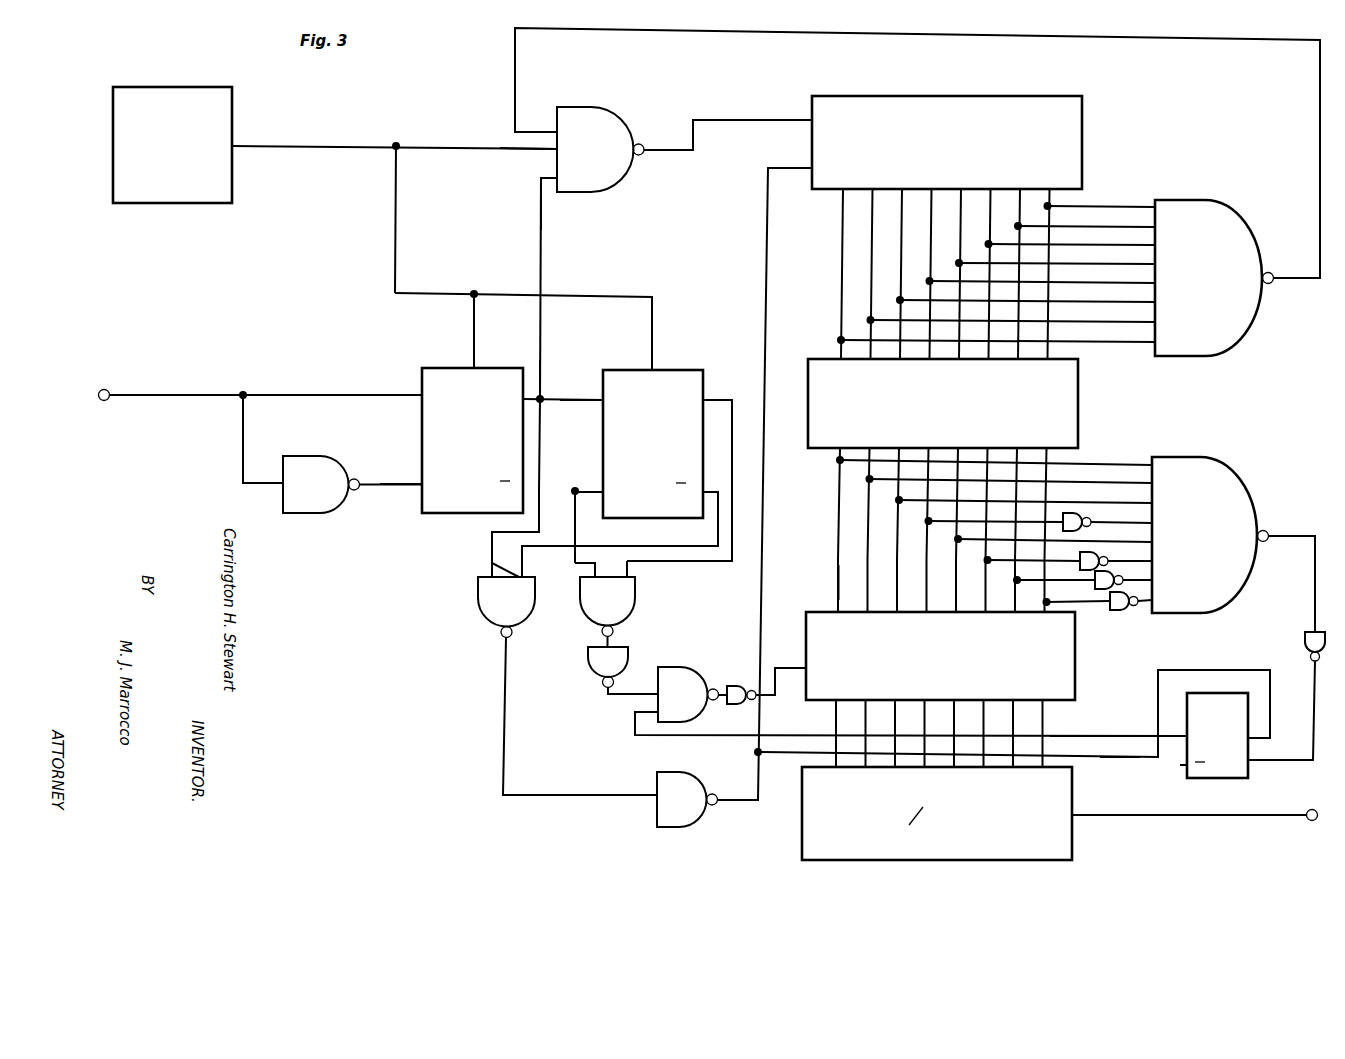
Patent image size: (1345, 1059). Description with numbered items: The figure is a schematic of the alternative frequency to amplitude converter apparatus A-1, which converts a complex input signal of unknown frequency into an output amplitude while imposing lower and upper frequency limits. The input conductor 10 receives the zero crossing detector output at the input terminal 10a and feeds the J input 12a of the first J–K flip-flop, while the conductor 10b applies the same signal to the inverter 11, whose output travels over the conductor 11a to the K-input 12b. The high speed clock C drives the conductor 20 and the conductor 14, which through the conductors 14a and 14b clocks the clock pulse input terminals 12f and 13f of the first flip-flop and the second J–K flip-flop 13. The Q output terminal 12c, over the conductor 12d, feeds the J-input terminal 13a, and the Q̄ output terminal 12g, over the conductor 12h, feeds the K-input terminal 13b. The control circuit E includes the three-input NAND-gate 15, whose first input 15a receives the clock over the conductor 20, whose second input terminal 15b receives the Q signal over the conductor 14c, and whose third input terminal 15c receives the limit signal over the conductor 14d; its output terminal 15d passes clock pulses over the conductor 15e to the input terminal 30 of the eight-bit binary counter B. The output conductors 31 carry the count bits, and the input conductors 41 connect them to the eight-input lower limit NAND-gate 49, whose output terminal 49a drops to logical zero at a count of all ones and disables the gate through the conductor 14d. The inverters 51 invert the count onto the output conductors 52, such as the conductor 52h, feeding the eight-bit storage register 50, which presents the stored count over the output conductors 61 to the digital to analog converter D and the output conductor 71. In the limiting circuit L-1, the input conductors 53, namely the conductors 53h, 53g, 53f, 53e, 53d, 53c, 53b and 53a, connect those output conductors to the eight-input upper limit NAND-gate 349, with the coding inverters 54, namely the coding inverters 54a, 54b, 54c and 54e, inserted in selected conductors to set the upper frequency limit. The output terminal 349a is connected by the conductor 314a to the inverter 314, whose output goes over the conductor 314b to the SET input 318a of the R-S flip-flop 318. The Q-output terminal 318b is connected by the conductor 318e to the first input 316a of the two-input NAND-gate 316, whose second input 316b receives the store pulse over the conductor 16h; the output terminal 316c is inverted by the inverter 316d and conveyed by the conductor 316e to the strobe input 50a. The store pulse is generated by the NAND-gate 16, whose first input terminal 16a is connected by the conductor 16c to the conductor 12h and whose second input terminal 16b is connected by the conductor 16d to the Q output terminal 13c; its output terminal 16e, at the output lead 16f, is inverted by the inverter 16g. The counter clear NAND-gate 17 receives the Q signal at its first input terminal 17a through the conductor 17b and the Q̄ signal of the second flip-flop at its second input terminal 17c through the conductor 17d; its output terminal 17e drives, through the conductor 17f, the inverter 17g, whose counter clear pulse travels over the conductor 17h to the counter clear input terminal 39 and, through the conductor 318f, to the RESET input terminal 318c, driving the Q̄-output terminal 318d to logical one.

The high speed clock C is at (233, 100).
The electrical conductor 20 is at (340, 141).
The electrical conductor 14 is at (395, 214).
The conductor 14a is at (474, 316).
The conductor 14b is at (571, 296).
The conductor 14c is at (541, 250).
The electrical conductor 14d is at (708, 30).
The three-input NAND-gate 15 is at (609, 108).
The first input of NAND-gate 15 15a is at (554, 152).
The second input terminal of NAND-gate 15 15b is at (557, 182).
The third input terminal of NAND-gate 15 15c is at (557, 133).
The output terminal of NAND-gate 15 15d is at (645, 156).
The electrical conductor 15e is at (713, 116).
The eight-bit binary counter B is at (1083, 110).
The input terminal of counter B 30 is at (811, 118).
The counter clear input terminal 39 is at (811, 166).
The output conductors 31 is at (830, 219).
The input conductors 41 is at (1112, 205).
The eight-input lower limit NAND-gate 49 is at (1191, 199).
The output terminal of NAND-gate 49 49a is at (1270, 284).
The inverters 51 is at (1079, 375).
The input conductors 53 is at (1088, 449).
The output conductors 52 is at (830, 588).
The output conductor 52h is at (838, 569).
The input conductor 53h is at (847, 461).
The input conductor 53g is at (878, 480).
The input conductor 53f is at (903, 500).
The input conductor 53e is at (938, 521).
The input conductor 53d is at (963, 539).
The input conductor 53c is at (980, 565).
The input conductor 53b is at (1017, 582).
The input conductor 53a is at (1053, 607).
The coding inverters 54 is at (1155, 615).
The coding inverter 54a is at (1136, 610).
The coding inverter 54b is at (1150, 575).
The coding inverter 54c is at (1092, 552).
The coding inverter 54e is at (1080, 512).
The limiting circuit L-1 is at (1241, 518).
The eight-input upper limit NAND-gate 349 is at (1240, 462).
The output terminal of NAND-gate 349 349a is at (1268, 530).
The conductor 314a is at (1315, 591).
The inverter 314 is at (1304, 635).
The conductor 314b is at (1314, 665).
The eight-bit storage register 50 is at (1076, 673).
The strobe input of storage register 50a is at (798, 662).
The digital to analog converter D is at (1073, 840).
The output conductor 71 is at (1170, 820).
The R-S flip-flop 318 is at (1191, 692).
The SET input of flip-flop 318 318a is at (1250, 762).
The Q-output terminal of flip-flop 318 318b is at (1185, 735).
The RESET input terminal of flip-flop 318 318c is at (1244, 738).
The Q̄-output terminal of flip-flop 318 318d is at (1182, 765).
The electrical conductor 318e is at (1072, 736).
The electrical conductor 318f is at (1117, 758).
The output conductors 61 is at (1050, 759).
The two-input NAND-gate 316 is at (678, 667).
The first input of NAND-gate 316 316a is at (637, 706).
The second input of NAND-gate 316 316b is at (655, 688).
The output terminal of NAND-gate 316 316c is at (714, 690).
The inverter 316d is at (746, 686).
The electrical conductor 316e is at (766, 700).
The input conductor 10 is at (183, 392).
The input terminal 10a is at (98, 396).
The electrical conductor 10b is at (243, 438).
The inverter 11 is at (307, 456).
The electrical conductor 11a is at (379, 482).
The J input of first flip-flop 12a is at (420, 388).
The K-input of first flip-flop 12b is at (419, 488).
The Q output terminal of first flip-flop 12c is at (534, 389).
The conductor 12d is at (562, 398).
The clock pulse input terminal of first flip-flop 12f is at (472, 363).
The Q̄ output terminal of first flip-flop 12g is at (523, 473).
The electrical conductor 12h is at (550, 432).
The second J–K flip-flop 13 is at (624, 370).
The J-input terminal of flip-flop 13 13a is at (602, 402).
The K-input terminal of flip-flop 13 13b is at (601, 489).
The Q output terminal of flip-flop 13 13c is at (706, 396).
The clock pulse input terminal of flip-flop 13 13f is at (654, 367).
The NAND-gate 16 is at (636, 595).
The first input terminal of NAND-gate 16 16a is at (603, 568).
The second input terminal of NAND-gate 16 16b is at (630, 564).
The electrical conductor 16c is at (578, 530).
The conductor 16d is at (718, 566).
The output terminal of NAND-gate 16 16e is at (614, 632).
The NAND 16 output line 16f is at (605, 638).
The inverter 16g is at (588, 663).
The electrical conductor 16h is at (612, 694).
The control circuit E is at (515, 565).
The counter clear NAND-gate 17 is at (480, 593).
The first input terminal of NAND-gate 17 17a is at (479, 573).
The electrical conductor 17b is at (494, 539).
The second input terminal of NAND-gate 17 17c is at (493, 558).
The conductor 17d is at (551, 536).
The output terminal of NAND-gate 17 17e is at (501, 633).
The conductor 17f is at (503, 735).
The inverter 17g is at (657, 775).
The electrical conductor 17h is at (732, 805).
The alternative apparatus A-1 is at (367, 194).